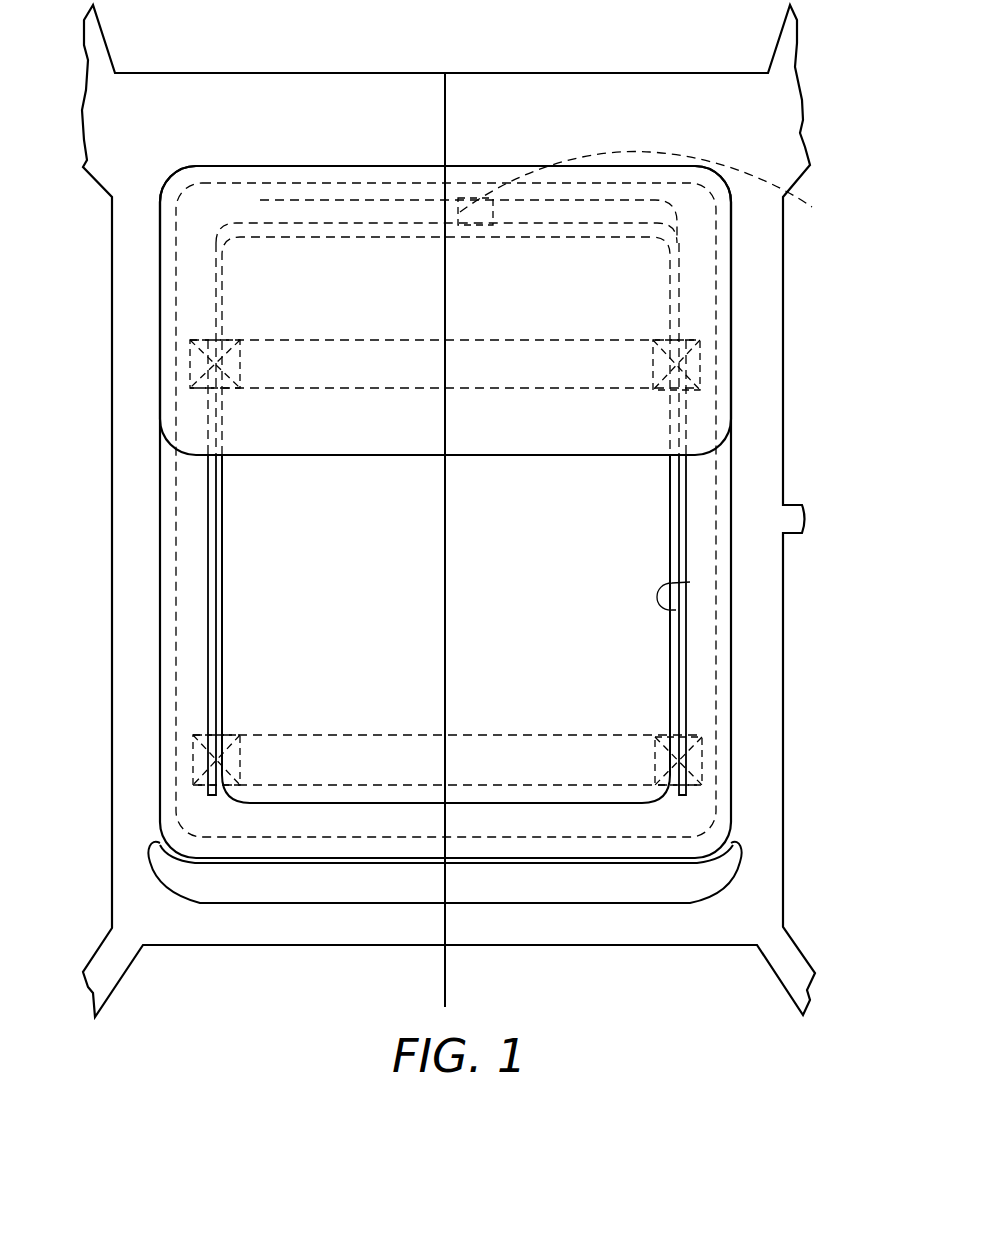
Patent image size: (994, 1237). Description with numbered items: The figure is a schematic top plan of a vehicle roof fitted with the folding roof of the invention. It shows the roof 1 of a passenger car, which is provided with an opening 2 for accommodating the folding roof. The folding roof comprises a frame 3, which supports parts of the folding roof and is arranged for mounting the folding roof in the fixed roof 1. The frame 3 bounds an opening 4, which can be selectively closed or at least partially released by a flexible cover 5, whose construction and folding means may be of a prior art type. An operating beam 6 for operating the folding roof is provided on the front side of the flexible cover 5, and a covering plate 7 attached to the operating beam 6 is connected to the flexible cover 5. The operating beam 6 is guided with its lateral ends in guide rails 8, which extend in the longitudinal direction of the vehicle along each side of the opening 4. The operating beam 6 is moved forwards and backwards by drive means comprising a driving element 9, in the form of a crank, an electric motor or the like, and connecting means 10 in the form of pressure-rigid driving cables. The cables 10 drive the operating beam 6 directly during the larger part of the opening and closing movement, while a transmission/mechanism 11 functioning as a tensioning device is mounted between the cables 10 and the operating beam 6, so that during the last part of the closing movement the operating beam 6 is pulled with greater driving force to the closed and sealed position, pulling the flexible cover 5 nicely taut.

The roof 1 is at (765, 655).
The container outline 2 is at (700, 692).
The frame 3 is at (695, 632).
The opening 4 is at (690, 582).
The flexible cover 5 is at (648, 293).
The operating beam 6 is at (610, 375).
The covering plate 7 is at (608, 412).
The guide rails 8 is at (213, 593).
The driving element 9 is at (648, 186).
The connecting means 10 is at (617, 222).
The transmission/mechanism 11 is at (185, 362).